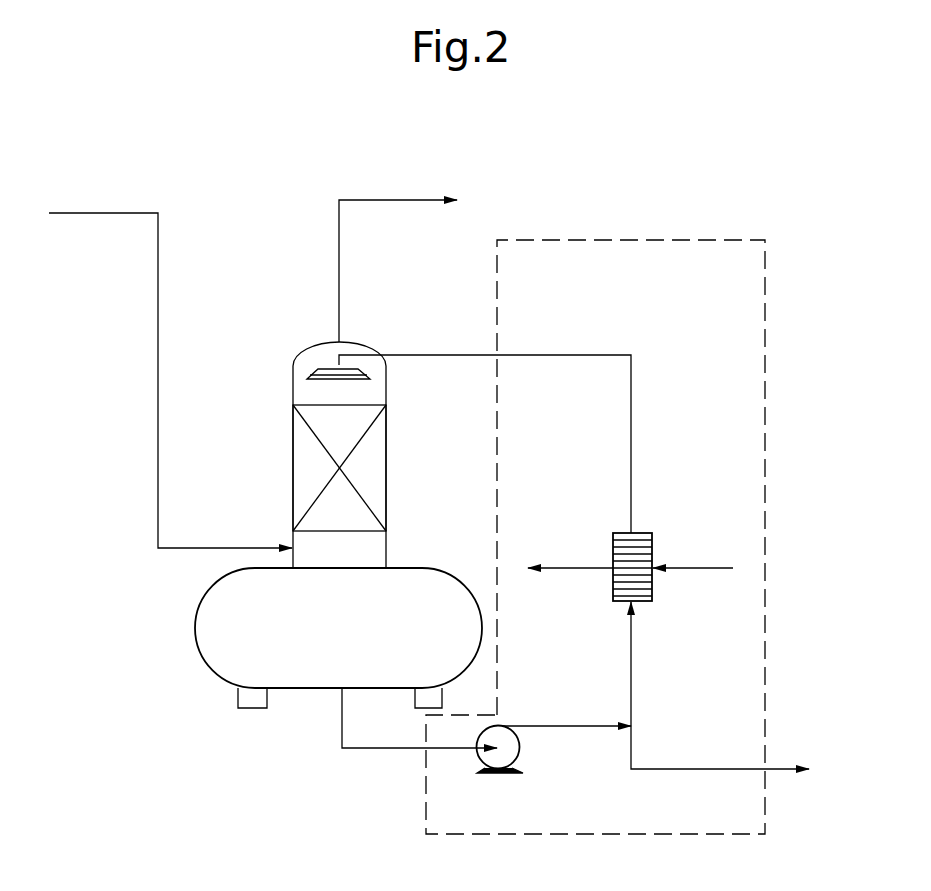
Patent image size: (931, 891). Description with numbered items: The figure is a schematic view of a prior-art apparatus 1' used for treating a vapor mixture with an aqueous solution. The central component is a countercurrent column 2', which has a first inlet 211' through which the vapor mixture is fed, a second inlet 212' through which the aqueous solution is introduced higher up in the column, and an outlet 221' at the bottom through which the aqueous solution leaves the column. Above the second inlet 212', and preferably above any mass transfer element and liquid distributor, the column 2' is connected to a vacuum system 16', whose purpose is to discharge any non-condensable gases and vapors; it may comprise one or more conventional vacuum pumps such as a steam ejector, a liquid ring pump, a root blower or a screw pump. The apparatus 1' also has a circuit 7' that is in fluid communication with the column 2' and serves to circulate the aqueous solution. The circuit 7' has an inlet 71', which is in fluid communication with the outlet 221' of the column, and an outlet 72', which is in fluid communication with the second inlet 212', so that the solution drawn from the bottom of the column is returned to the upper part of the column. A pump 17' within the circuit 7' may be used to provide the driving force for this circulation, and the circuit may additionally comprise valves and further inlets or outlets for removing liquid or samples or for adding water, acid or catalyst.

The apparatus 1' is at (385, 140).
The vacuum system 16' is at (429, 261).
The countercurrent column 2' is at (363, 455).
The first inlet 211' is at (170, 382).
The second inlet 212' is at (485, 423).
The outlet 72' is at (630, 488).
The outlet 221' is at (338, 649).
The inlet 71' is at (419, 740).
The pump 17' is at (554, 771).
The circuit 7' is at (617, 563).